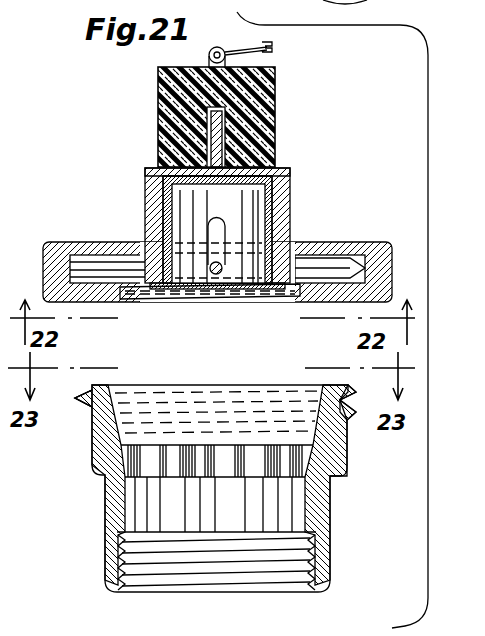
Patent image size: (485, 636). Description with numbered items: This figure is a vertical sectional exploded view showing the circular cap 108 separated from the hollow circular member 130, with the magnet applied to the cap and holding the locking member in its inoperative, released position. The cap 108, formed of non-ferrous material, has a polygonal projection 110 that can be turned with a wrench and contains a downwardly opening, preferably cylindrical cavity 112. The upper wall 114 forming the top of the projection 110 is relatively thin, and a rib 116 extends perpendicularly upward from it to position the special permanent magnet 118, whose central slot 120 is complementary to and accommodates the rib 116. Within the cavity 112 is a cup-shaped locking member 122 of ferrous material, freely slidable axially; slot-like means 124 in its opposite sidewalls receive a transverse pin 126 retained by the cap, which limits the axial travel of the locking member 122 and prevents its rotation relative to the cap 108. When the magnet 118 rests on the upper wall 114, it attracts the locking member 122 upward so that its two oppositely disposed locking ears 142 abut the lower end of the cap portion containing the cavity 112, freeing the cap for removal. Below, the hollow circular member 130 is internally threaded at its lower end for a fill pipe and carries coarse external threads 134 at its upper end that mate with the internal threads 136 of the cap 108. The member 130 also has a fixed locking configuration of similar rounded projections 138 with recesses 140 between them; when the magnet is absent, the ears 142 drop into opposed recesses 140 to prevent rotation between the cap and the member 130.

The circular cap 108 is at (340, 243).
The projection 110 is at (147, 209).
The cavity 112 is at (286, 170).
The upper wall 114 is at (262, 135).
The rib 116 is at (266, 100).
The permanent magnet 118 is at (158, 76).
The central slot 120 is at (208, 114).
The cup-shaped locking member 122 is at (270, 210).
The slot-like means 124 is at (212, 220).
The pin 126 is at (233, 290).
The hollow circular member 130 is at (330, 500).
The external threads 134 is at (80, 432).
The internal threads 136 is at (92, 301).
The rounded projections 138 is at (135, 480).
The recesses 140 is at (175, 457).
The locking ears 142 is at (152, 290).